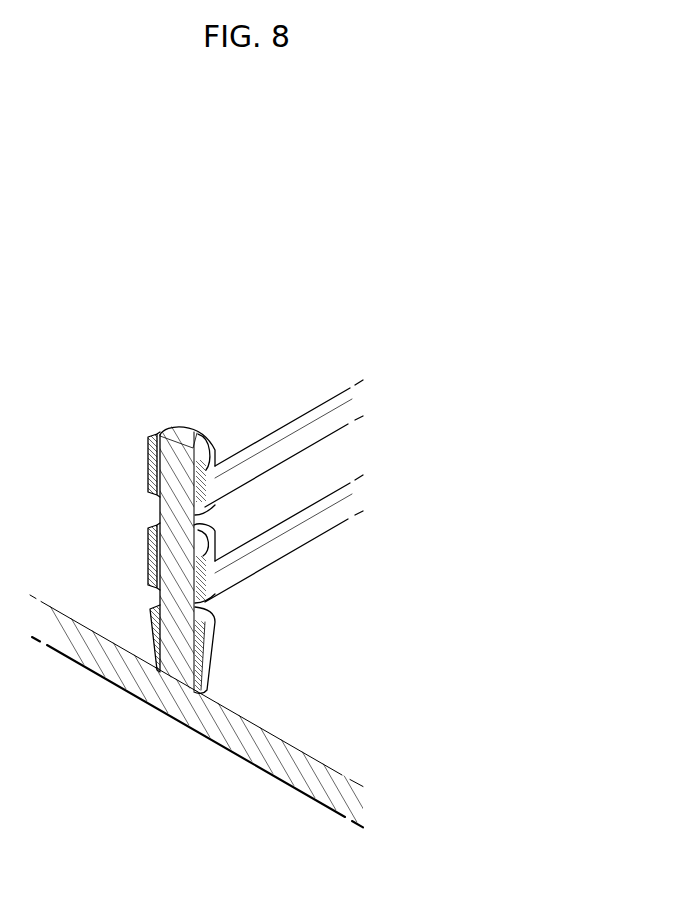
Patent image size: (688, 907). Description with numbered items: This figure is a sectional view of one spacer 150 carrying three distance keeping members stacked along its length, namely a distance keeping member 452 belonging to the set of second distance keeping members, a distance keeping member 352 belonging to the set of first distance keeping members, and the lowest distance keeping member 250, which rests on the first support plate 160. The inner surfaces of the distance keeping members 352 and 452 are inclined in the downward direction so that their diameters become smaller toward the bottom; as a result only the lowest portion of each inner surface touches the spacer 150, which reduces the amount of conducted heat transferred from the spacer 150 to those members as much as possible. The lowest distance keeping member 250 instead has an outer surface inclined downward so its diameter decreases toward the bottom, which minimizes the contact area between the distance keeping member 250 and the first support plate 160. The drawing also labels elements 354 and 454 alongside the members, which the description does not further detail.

The spacer 150 is at (183, 431).
The first support plate 160 is at (187, 715).
The distance keeping member 250 is at (208, 655).
The distance keeping member 352 is at (148, 570).
The lower connecting pipe 354 is at (300, 533).
The distance keeping member 452 is at (148, 467).
The upper connecting pipe 454 is at (300, 437).